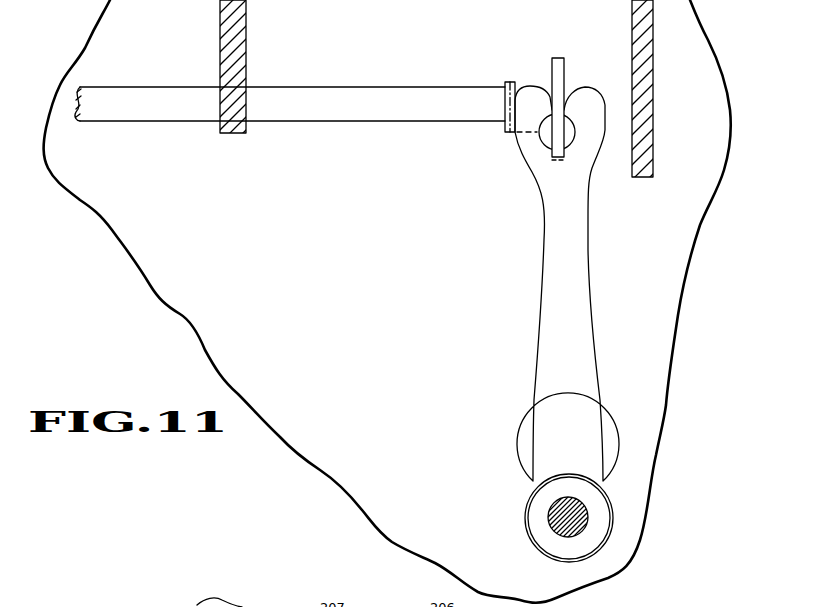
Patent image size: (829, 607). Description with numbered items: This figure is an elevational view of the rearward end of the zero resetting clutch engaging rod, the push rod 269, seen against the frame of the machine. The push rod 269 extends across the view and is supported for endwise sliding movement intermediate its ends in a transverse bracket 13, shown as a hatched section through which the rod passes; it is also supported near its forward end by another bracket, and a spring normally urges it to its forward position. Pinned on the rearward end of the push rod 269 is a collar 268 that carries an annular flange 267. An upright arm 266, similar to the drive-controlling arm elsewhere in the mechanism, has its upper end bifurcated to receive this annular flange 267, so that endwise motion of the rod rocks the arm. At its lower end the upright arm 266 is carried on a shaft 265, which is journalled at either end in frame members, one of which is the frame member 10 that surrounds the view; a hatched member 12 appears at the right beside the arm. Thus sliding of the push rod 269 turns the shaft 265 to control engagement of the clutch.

The frame member 10 is at (398, 268).
The wall plate 12 is at (633, 42).
The transverse bracket 13 is at (244, 52).
The shaft 265 is at (548, 516).
The upright arm 266 is at (586, 250).
The annular flange 267 is at (552, 62).
The collar 268 is at (513, 83).
The push rod 269 is at (384, 82).